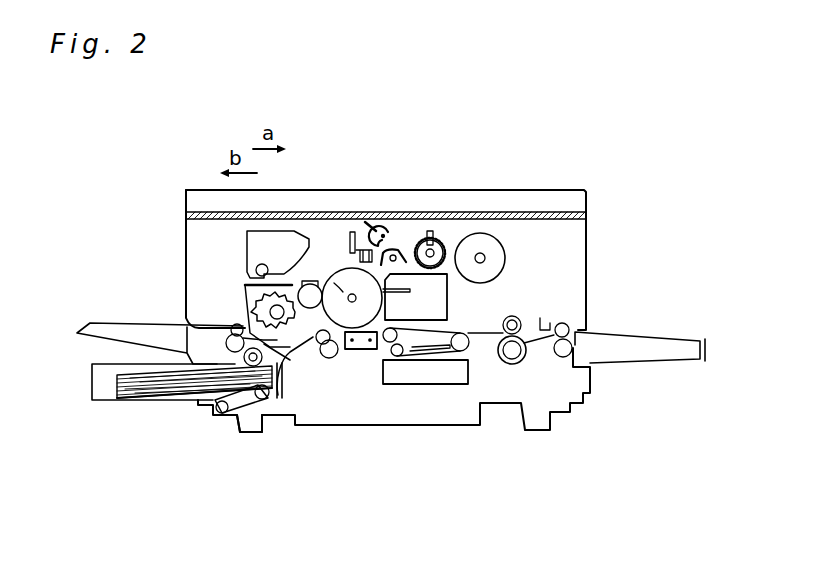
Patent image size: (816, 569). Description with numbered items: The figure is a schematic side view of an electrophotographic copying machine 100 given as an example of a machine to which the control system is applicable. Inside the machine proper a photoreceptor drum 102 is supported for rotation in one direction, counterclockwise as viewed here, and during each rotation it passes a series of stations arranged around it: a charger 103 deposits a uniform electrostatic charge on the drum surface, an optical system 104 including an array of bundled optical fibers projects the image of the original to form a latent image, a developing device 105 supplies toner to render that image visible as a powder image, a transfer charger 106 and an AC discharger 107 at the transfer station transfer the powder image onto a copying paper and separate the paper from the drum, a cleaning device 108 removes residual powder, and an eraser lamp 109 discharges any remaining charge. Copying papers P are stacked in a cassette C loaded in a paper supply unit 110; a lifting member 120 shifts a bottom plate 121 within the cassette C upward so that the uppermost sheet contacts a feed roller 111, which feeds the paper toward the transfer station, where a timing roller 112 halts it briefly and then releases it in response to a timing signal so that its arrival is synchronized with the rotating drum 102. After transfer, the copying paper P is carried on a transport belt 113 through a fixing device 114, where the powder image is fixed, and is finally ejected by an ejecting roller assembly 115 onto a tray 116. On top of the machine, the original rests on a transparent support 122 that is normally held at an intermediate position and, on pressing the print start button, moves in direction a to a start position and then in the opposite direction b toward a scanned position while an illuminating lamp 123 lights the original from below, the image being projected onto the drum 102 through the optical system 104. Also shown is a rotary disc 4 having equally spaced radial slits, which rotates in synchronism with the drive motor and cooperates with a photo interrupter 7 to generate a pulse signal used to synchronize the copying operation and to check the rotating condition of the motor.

The copying machine 100 is at (599, 231).
The photoreceptor drum 102 is at (345, 287).
The charger 103 is at (363, 248).
The optical system 104 is at (350, 231).
The developing device 105 is at (245, 291).
The transfer charger 106 is at (350, 352).
The AC discharger 107 is at (372, 352).
The cleaning device 108 is at (440, 302).
The eraser lamp 109 is at (410, 248).
The paper supply unit 110 is at (199, 413).
The feed roller 111 is at (295, 355).
The timing roller 112 is at (330, 358).
The transport belt 113 is at (438, 365).
The fixing device 114 is at (520, 365).
The ejecting roller assembly 115 is at (568, 357).
The tray 116 is at (660, 347).
The lifting member 120 is at (250, 432).
The bottom plate 121 is at (178, 393).
The transparent support 122 is at (553, 214).
The illuminating lamp 123 is at (378, 226).
The photo interrupter 7 is at (441, 241).
The rotary disc 4 is at (477, 230).
The cassette C is at (117, 400).
The copying paper P is at (140, 385).